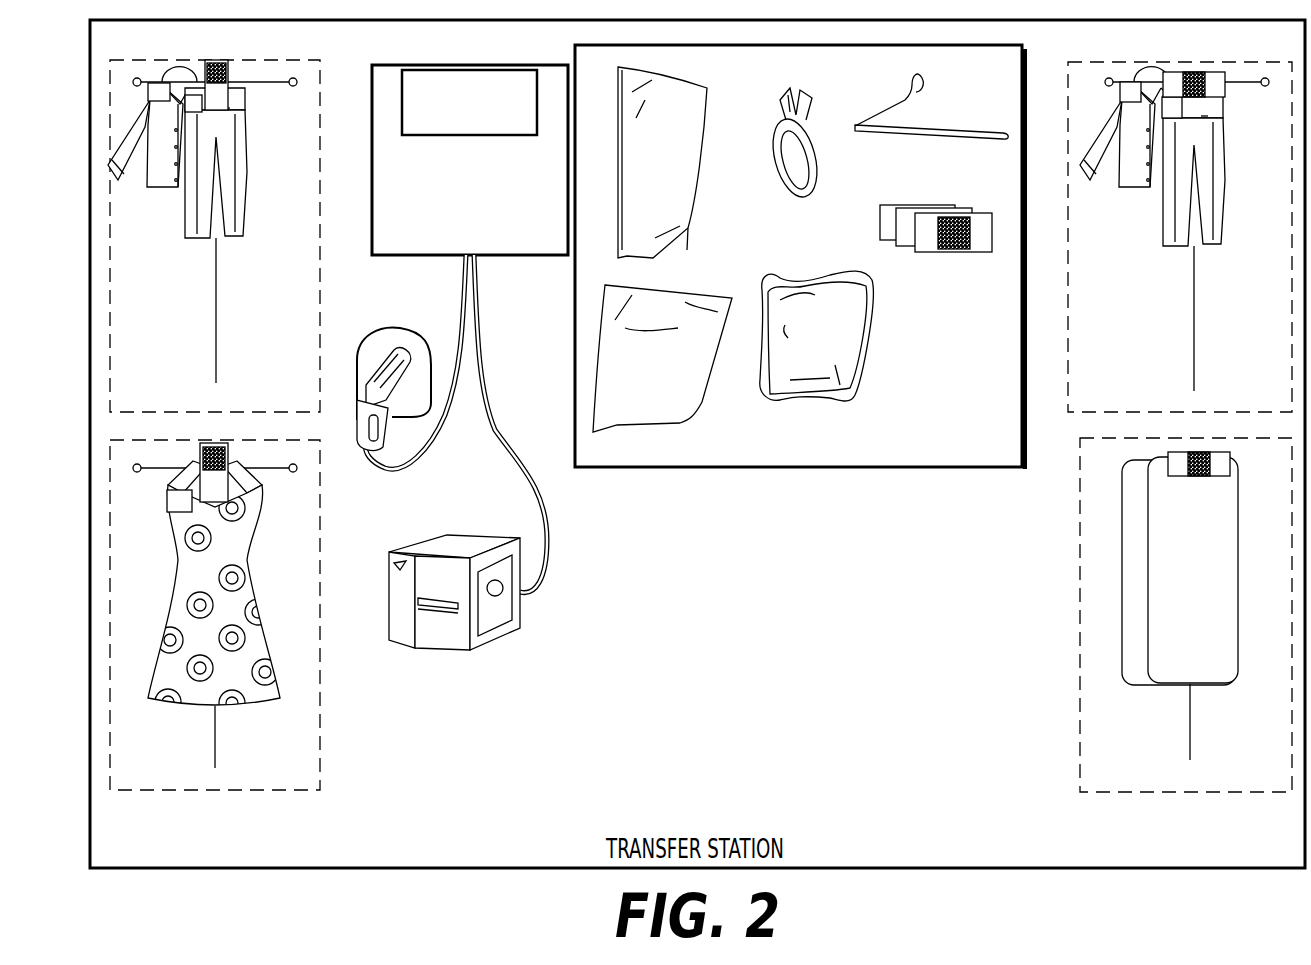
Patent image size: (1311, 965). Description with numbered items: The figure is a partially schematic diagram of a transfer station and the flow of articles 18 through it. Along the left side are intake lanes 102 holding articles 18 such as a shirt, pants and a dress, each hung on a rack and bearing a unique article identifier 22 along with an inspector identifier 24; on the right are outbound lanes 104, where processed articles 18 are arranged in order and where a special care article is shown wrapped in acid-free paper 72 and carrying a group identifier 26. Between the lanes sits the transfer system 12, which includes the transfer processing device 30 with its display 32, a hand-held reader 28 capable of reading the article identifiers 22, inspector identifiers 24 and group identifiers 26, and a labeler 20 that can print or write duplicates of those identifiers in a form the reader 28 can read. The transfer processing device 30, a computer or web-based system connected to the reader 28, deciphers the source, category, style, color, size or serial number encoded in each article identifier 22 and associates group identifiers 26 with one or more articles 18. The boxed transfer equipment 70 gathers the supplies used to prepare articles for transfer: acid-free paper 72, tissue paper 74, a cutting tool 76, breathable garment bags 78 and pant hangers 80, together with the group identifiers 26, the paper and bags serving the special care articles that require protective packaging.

The transfer system 12 is at (360, 90).
The article 18 is at (160, 190).
The article label producer or labeler 20 is at (462, 537).
The article identifier 22 is at (160, 86).
The inspector identifier 24 is at (232, 108).
The group identifier 26 is at (983, 252).
The reader 28 is at (424, 336).
The transfer processing device 30 is at (398, 257).
The display 32 is at (401, 101).
The transfer equipment 70 is at (750, 488).
The acid-free paper 72 is at (688, 222).
The tissue paper 74 is at (712, 296).
The cutting tool 76 is at (800, 198).
The breathable garment bag 78 is at (850, 378).
The pant hanger 80 is at (905, 140).
The intake lane 102 is at (320, 316).
The outbound lane 104 is at (1087, 382).